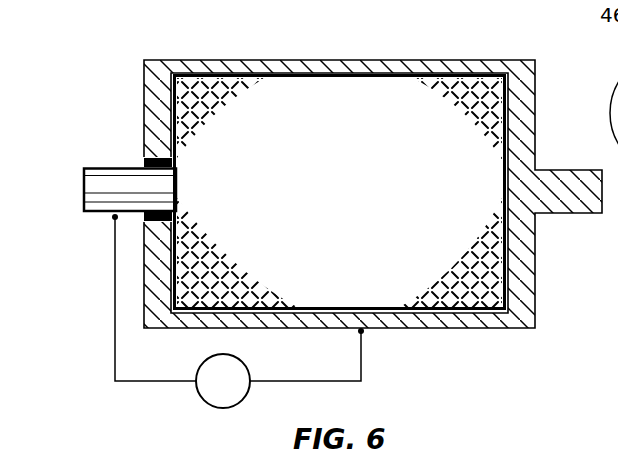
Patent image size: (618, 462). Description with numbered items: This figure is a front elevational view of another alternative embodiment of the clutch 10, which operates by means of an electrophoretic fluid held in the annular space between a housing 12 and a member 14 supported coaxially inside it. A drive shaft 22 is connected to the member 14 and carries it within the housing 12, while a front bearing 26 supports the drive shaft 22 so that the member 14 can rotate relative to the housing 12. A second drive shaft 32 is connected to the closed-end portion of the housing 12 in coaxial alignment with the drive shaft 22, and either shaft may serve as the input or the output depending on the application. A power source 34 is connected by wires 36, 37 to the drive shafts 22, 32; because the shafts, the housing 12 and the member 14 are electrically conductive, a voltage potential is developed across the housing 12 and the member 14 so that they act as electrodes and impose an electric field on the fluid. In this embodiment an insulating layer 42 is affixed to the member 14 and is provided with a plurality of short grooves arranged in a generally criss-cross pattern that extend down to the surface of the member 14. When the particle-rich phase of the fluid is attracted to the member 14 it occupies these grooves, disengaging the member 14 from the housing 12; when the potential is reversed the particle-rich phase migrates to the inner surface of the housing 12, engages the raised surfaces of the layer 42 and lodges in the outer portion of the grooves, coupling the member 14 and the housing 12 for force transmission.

The clutch 10 is at (88, 80).
The housing 12 is at (238, 67).
The member 14 is at (170, 117).
The drive shaft 22 is at (110, 167).
The front bearing 26 is at (146, 222).
The drive shaft 32 is at (580, 214).
The power source 34 is at (222, 408).
The wire 36 is at (131, 383).
The wire 37 is at (318, 383).
The insulating layer 42 is at (343, 97).